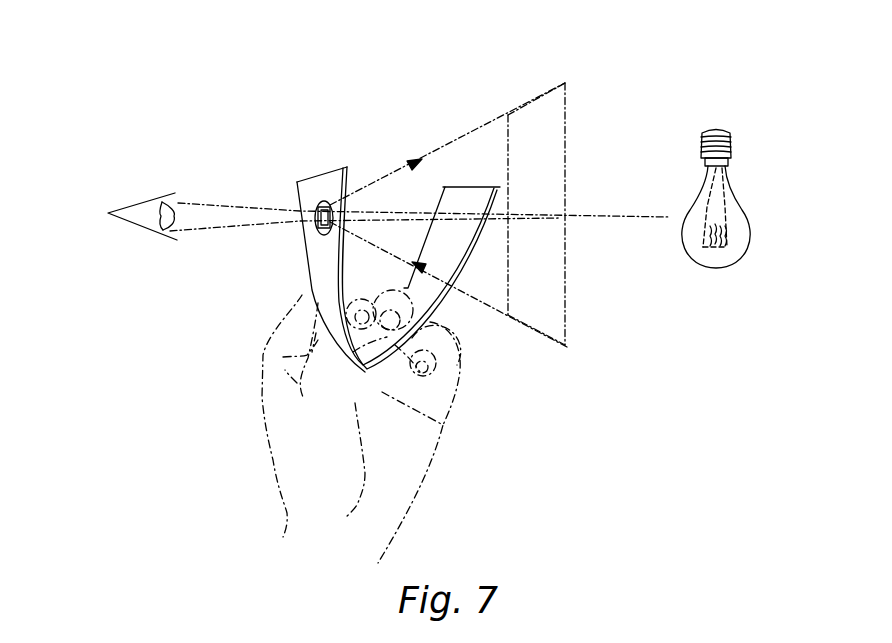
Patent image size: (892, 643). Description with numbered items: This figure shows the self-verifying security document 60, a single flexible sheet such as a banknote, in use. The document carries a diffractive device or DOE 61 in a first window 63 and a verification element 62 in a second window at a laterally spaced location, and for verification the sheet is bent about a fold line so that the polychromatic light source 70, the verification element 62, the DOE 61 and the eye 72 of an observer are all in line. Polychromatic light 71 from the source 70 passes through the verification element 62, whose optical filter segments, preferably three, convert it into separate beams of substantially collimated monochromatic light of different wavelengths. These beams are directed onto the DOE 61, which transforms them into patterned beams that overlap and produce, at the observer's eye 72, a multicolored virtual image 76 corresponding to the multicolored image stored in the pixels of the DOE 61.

The self-verifying security document 60 is at (487, 193).
The diffractive device (DOE) 61 is at (317, 216).
The verification element 62 is at (452, 215).
The first window 63 is at (323, 205).
The polychromatic light source 70 is at (713, 260).
The polychromatic light 71 is at (607, 218).
The eye of observer 72 is at (145, 212).
The multicolored virtual image 76 is at (560, 122).